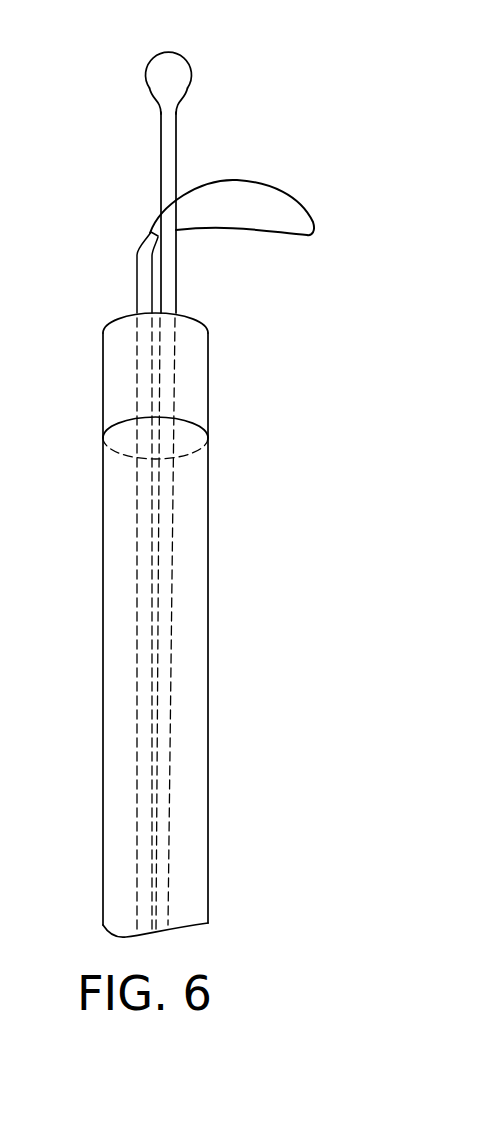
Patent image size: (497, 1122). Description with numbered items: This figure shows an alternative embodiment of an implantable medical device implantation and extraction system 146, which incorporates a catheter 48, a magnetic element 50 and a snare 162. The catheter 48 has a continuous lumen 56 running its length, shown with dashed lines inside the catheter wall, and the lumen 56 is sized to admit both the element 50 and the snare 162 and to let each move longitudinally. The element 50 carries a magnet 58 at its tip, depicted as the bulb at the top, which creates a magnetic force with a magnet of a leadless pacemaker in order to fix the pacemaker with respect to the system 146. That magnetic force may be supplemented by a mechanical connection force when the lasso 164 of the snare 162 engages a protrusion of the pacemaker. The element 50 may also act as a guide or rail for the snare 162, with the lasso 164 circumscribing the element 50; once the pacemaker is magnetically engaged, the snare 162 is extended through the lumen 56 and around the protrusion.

The catheter 48 is at (207, 753).
The magnetic element 50 is at (177, 156).
The lumen 56 is at (188, 605).
The magnet 58 is at (193, 70).
The implantable medical device implantation and extraction system 146 is at (245, 483).
The snare 162 is at (152, 297).
The lasso 164 is at (307, 203).